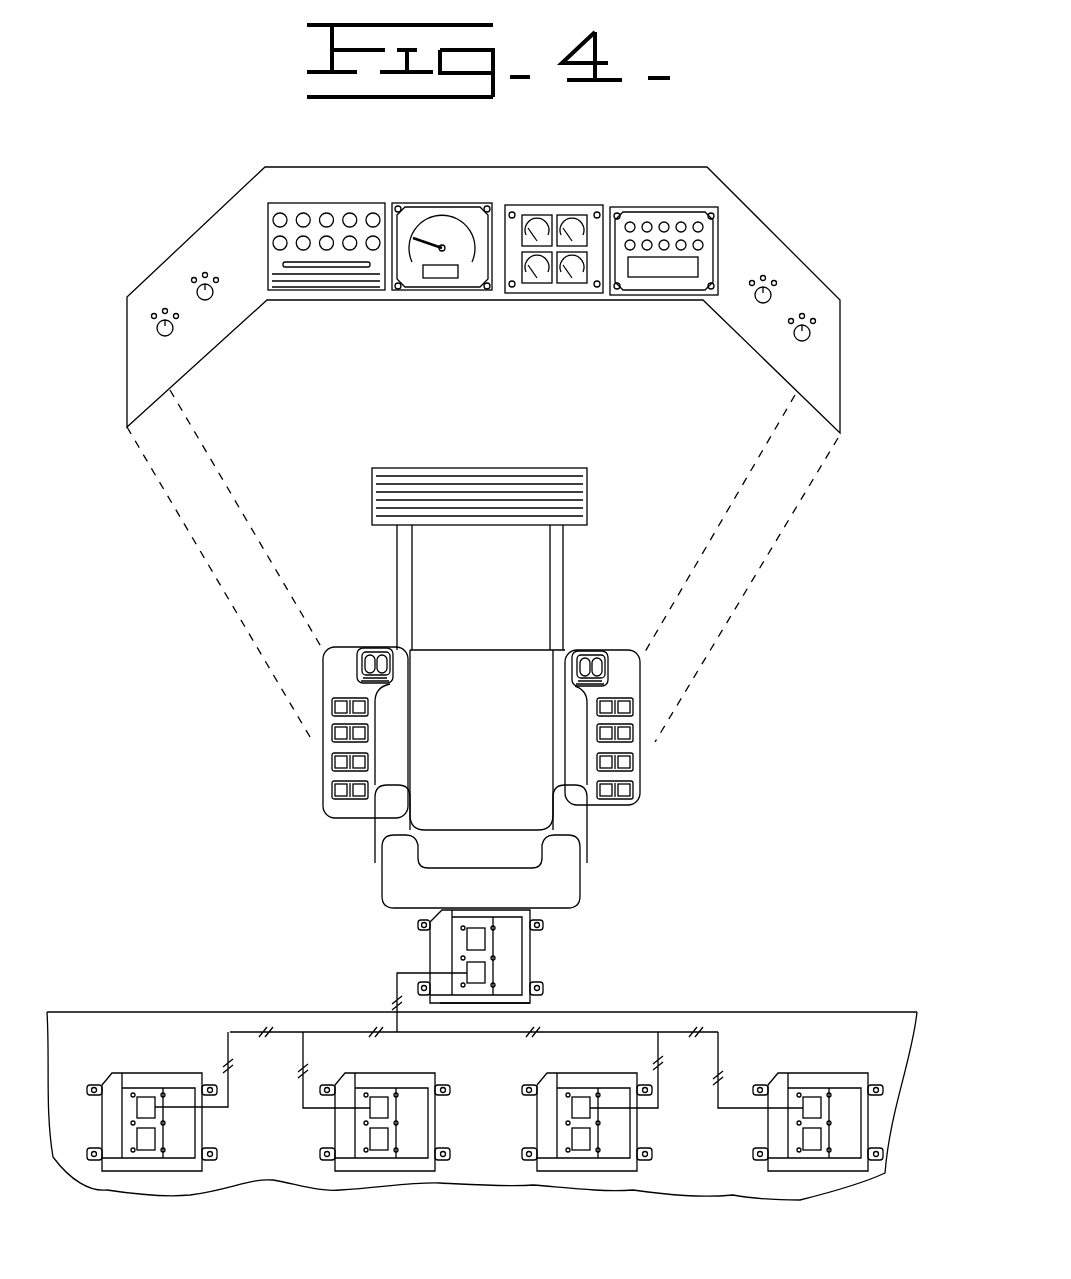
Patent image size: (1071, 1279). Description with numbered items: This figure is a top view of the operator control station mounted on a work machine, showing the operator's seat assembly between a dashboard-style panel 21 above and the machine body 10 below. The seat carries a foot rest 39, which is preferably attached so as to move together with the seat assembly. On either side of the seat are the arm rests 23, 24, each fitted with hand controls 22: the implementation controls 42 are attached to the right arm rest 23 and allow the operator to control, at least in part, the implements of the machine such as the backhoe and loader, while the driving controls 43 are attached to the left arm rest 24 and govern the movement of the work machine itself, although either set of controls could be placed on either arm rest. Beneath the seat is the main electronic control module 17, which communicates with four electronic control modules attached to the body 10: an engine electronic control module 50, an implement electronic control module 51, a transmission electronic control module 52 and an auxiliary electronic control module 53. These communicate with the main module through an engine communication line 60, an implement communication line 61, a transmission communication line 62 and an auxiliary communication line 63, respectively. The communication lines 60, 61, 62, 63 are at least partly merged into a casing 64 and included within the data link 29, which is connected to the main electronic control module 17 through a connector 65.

The body 10 is at (140, 1012).
The main electronic control module 17 is at (532, 955).
The dashboard instrument panel 21 is at (723, 183).
The hand controls 22 is at (367, 763).
The arm rest 23 is at (605, 805).
The arm rest 24 is at (348, 818).
The data link 29 is at (397, 975).
The foot rest 39 is at (531, 468).
The implementation controls 42 is at (623, 662).
The driving controls 43 is at (333, 673).
The engine electronic control module 50 is at (205, 1137).
The implement electronic control module 51 is at (330, 1135).
The transmission electronic control module 52 is at (533, 1133).
The auxiliary electronic control module 53 is at (765, 1140).
The engine communication line 60 is at (228, 1090).
The implement communication line 61 is at (303, 1048).
The transmission communication line 62 is at (660, 1100).
The auxiliary communication line 63 is at (720, 1058).
The casing 64 is at (516, 1008).
The connector 65 is at (467, 968).